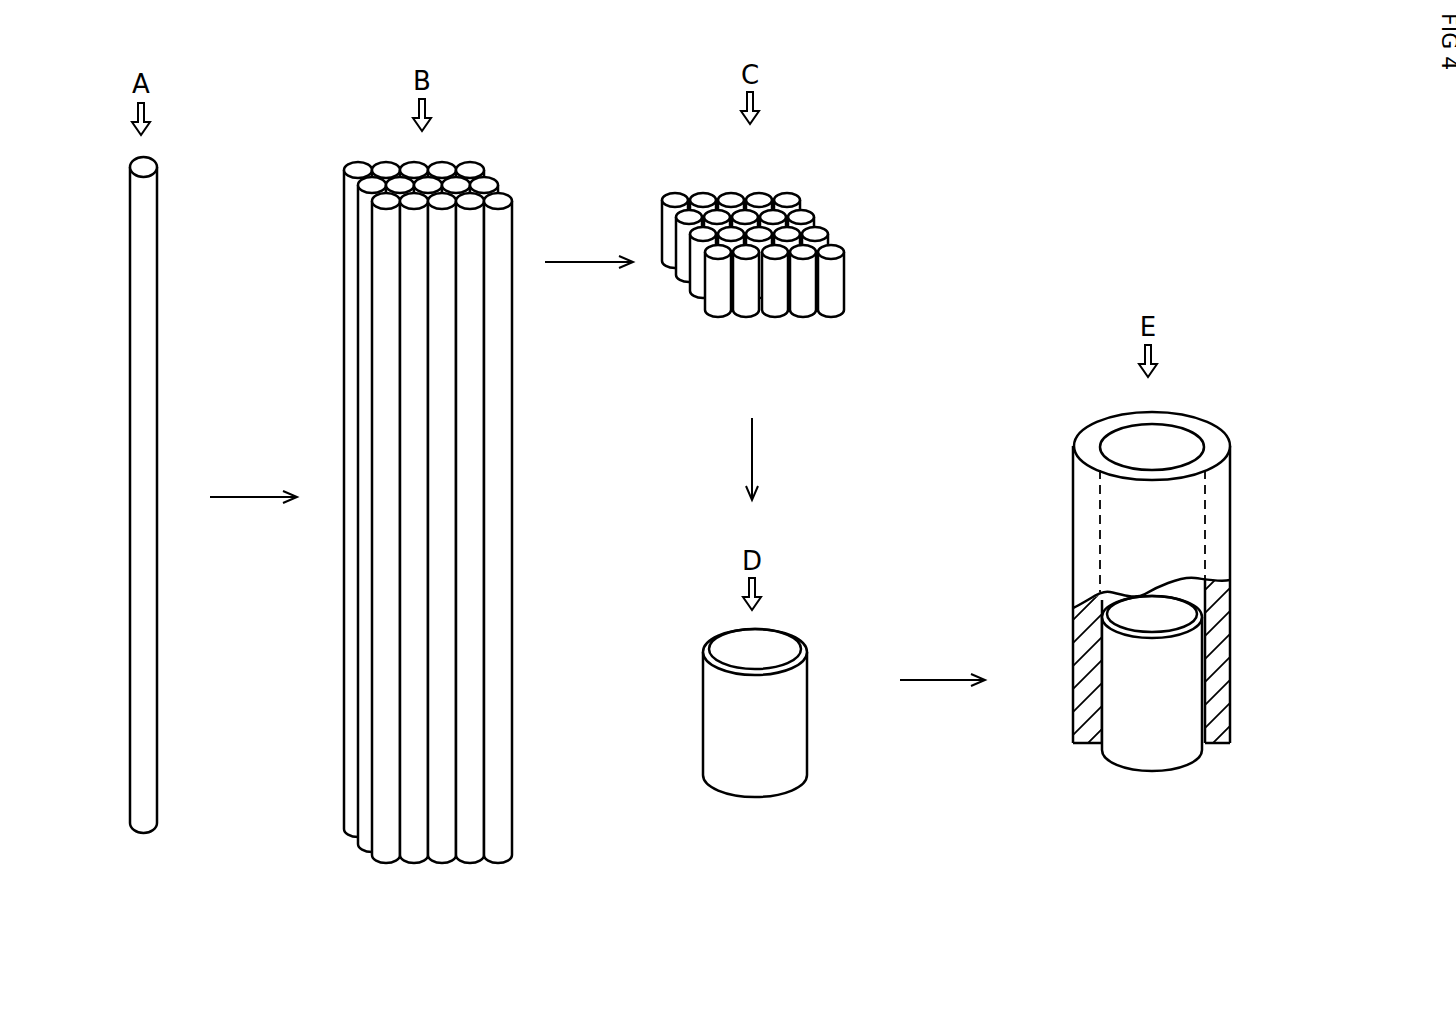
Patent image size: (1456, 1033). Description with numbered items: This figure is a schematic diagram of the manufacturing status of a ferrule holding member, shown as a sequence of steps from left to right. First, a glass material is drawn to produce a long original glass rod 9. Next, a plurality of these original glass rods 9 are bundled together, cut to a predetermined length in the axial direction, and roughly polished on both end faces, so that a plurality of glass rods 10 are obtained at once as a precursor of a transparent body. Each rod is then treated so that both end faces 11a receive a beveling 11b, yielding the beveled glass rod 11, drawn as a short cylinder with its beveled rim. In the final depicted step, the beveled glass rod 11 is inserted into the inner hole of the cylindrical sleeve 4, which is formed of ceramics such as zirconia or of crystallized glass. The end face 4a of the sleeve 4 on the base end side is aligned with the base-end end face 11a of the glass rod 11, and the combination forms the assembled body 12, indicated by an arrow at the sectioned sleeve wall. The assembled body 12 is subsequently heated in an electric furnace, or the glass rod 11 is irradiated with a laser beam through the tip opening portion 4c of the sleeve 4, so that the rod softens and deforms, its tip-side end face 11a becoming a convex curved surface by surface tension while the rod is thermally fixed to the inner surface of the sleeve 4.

The original glass rod 9 is at (137, 353).
The glass rods 10 is at (722, 310).
The beveled glass rod 11 is at (916, 710).
The end face 11a is at (768, 640).
The beveling 11b is at (777, 670).
The cylindrical sleeve 4 is at (1191, 588).
The end face of the sleeve 4a is at (1088, 747).
The tip opening portion 4c is at (1160, 438).
The assembled body 12 is at (1251, 630).